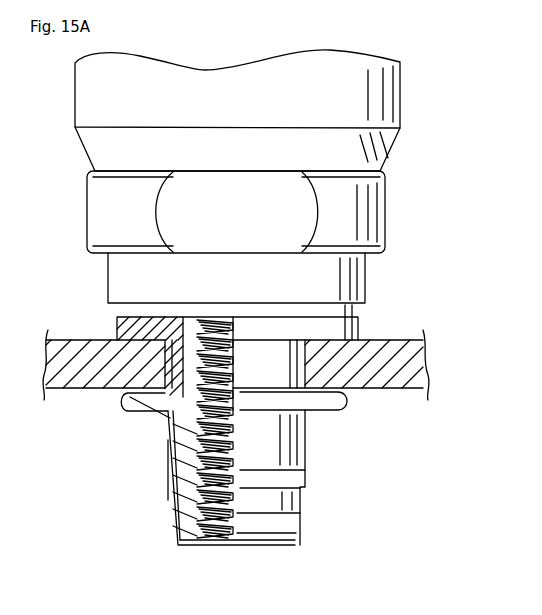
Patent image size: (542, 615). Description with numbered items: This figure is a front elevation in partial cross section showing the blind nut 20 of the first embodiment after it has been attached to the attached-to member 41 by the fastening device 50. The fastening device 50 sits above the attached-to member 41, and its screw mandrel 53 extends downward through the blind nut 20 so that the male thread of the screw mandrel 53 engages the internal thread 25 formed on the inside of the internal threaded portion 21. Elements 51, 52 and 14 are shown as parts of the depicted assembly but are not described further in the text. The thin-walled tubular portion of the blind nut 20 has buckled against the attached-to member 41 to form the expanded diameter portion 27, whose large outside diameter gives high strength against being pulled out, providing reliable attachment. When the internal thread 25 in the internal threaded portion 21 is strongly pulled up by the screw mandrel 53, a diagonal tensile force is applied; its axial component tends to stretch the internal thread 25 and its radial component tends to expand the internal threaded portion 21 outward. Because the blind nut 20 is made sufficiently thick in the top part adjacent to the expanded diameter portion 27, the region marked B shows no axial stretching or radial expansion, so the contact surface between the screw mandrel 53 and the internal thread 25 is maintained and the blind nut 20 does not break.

The fastening device 50 is at (418, 110).
The nut 51 is at (387, 213).
The collar 52 is at (362, 310).
The blind nut 20 is at (102, 326).
The flange 14 is at (362, 328).
The screw mandrel 53 is at (165, 415).
The attached-to member 41 is at (395, 388).
The expanded diameter portion 27 is at (120, 400).
The internal threaded portion 21 is at (173, 505).
The B part B is at (165, 471).
The internal thread 25 is at (222, 535).